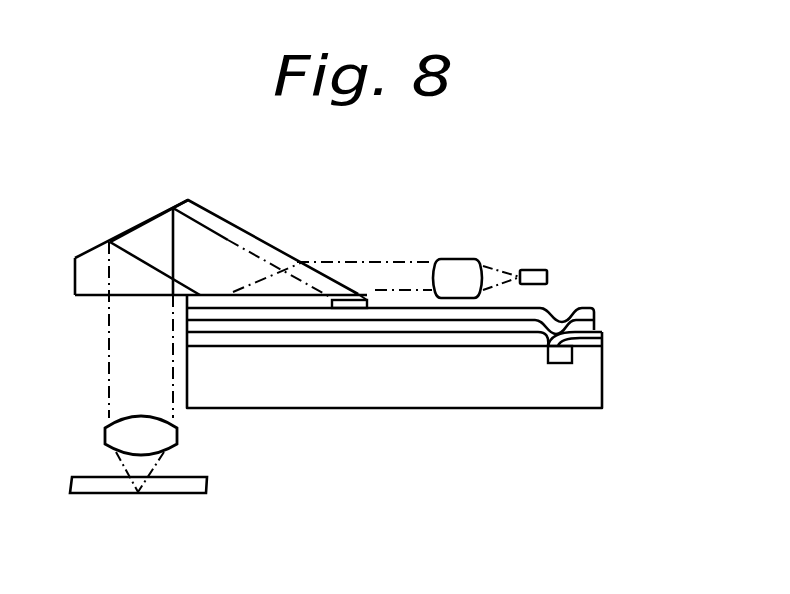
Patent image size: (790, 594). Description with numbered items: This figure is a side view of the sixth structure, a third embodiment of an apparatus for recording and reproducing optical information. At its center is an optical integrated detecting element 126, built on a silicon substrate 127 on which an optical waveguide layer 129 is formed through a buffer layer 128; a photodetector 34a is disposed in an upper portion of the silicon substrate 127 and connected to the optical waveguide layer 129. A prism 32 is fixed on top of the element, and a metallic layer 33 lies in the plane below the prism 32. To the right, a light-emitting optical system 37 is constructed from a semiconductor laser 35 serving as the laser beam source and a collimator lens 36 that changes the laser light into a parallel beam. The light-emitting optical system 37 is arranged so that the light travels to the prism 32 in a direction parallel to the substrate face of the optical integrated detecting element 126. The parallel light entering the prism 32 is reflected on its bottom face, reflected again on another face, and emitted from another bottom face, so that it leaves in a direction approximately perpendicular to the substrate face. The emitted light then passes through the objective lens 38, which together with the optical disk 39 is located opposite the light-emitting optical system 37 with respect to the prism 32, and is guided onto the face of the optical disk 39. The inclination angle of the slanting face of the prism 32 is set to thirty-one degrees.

The prism 32 is at (229, 236).
The metallic layer 33 is at (381, 303).
The photodetector 34a is at (563, 357).
The semiconductor laser 35 is at (538, 270).
The collimator lens 36 is at (447, 261).
The light-emitting optical system 37 is at (497, 268).
The objective lens 38 is at (103, 431).
The optical disk 39 is at (79, 487).
The optical integrated detecting element 126 is at (625, 347).
The silicon substrate 127 is at (412, 382).
The buffer layer 128 is at (281, 338).
The optical waveguide layer 129 is at (345, 325).